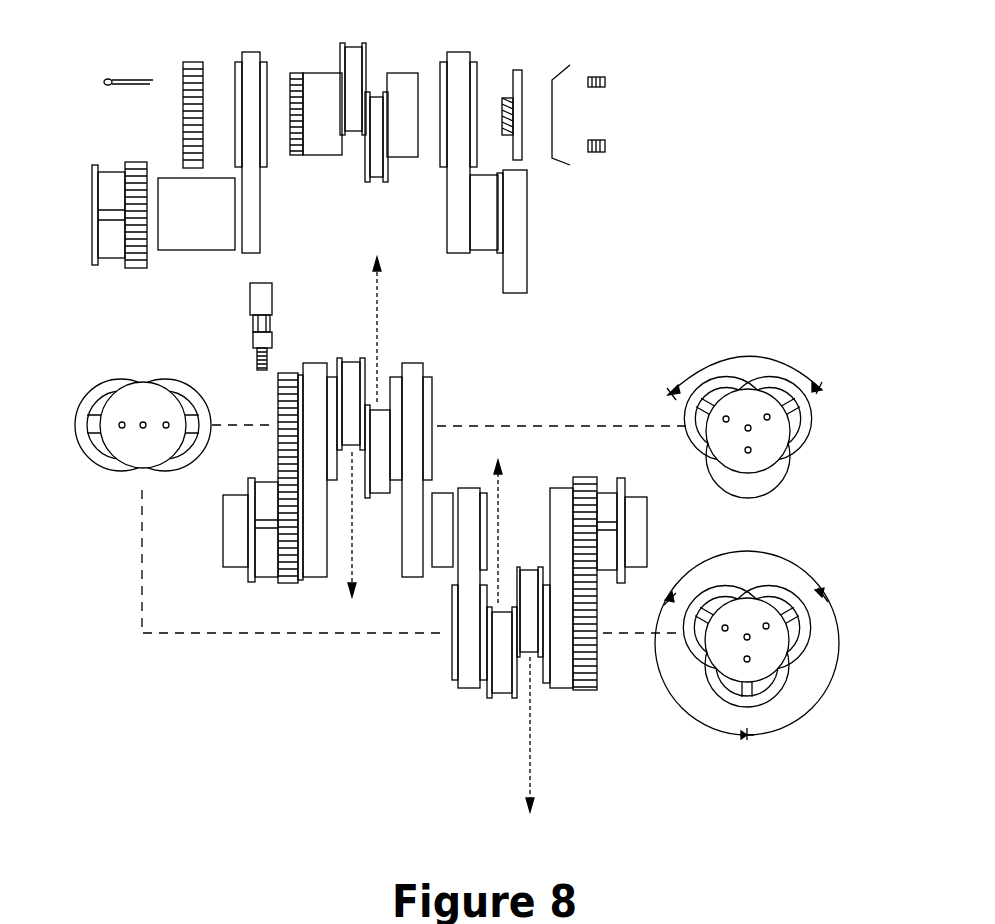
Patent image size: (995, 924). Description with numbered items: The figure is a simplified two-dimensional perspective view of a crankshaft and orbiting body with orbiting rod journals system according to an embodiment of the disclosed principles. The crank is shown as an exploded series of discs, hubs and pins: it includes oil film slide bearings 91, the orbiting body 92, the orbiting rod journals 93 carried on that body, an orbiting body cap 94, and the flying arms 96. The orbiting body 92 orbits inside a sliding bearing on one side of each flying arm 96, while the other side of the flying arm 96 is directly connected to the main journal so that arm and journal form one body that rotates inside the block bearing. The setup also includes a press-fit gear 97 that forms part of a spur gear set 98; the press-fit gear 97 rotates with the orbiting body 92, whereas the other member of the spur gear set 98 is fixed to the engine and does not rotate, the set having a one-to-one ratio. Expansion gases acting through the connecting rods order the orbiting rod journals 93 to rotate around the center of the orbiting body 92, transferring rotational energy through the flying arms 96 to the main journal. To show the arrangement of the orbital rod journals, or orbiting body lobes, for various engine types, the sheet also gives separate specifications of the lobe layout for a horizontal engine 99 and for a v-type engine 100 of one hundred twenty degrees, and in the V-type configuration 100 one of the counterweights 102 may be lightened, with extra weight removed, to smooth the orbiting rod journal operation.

The oil film slide bearings 91 is at (438, 228).
The orbiting body 92 is at (323, 83).
The orbiting rod journals 93 is at (375, 92).
The orbiting body cap 94 is at (247, 302).
The flying arms 96 is at (447, 192).
The press-fit gear 97 is at (197, 56).
The spur gear set 98 is at (127, 157).
The horizontal engine 99 is at (100, 470).
The v-type engine 100 is at (807, 417).
The counterweights 102 is at (675, 532).